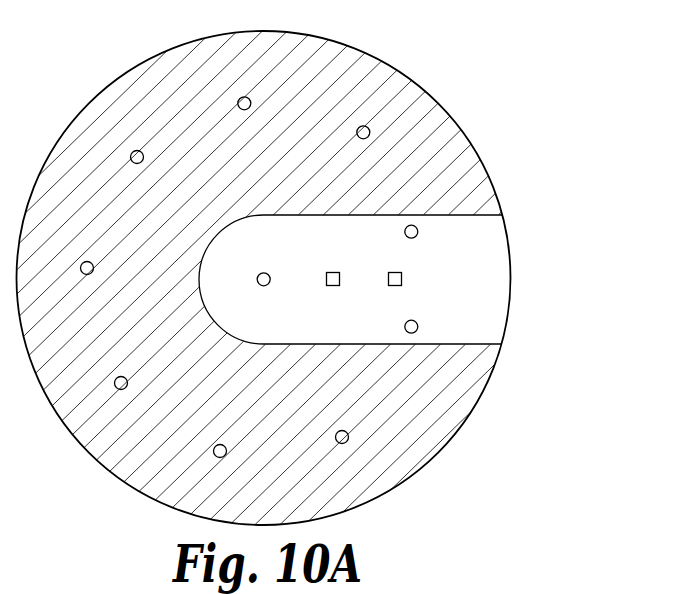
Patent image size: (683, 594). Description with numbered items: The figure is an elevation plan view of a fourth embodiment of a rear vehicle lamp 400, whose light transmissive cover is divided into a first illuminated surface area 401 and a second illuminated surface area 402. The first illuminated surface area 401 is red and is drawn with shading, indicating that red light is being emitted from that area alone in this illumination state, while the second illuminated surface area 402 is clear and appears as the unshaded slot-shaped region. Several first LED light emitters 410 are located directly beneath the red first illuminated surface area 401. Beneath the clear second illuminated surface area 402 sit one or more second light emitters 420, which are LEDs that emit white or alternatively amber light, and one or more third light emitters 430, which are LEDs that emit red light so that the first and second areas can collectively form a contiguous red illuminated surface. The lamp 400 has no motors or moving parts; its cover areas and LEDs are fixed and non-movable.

The lamp 400 is at (321, 274).
The first illuminated surface area 401 is at (450, 137).
The second illuminated surface area 402 is at (481, 259).
The second light emitter 420 is at (340, 286).
The third light emitter 430 is at (416, 332).
The first LED light emitter 410 is at (346, 442).